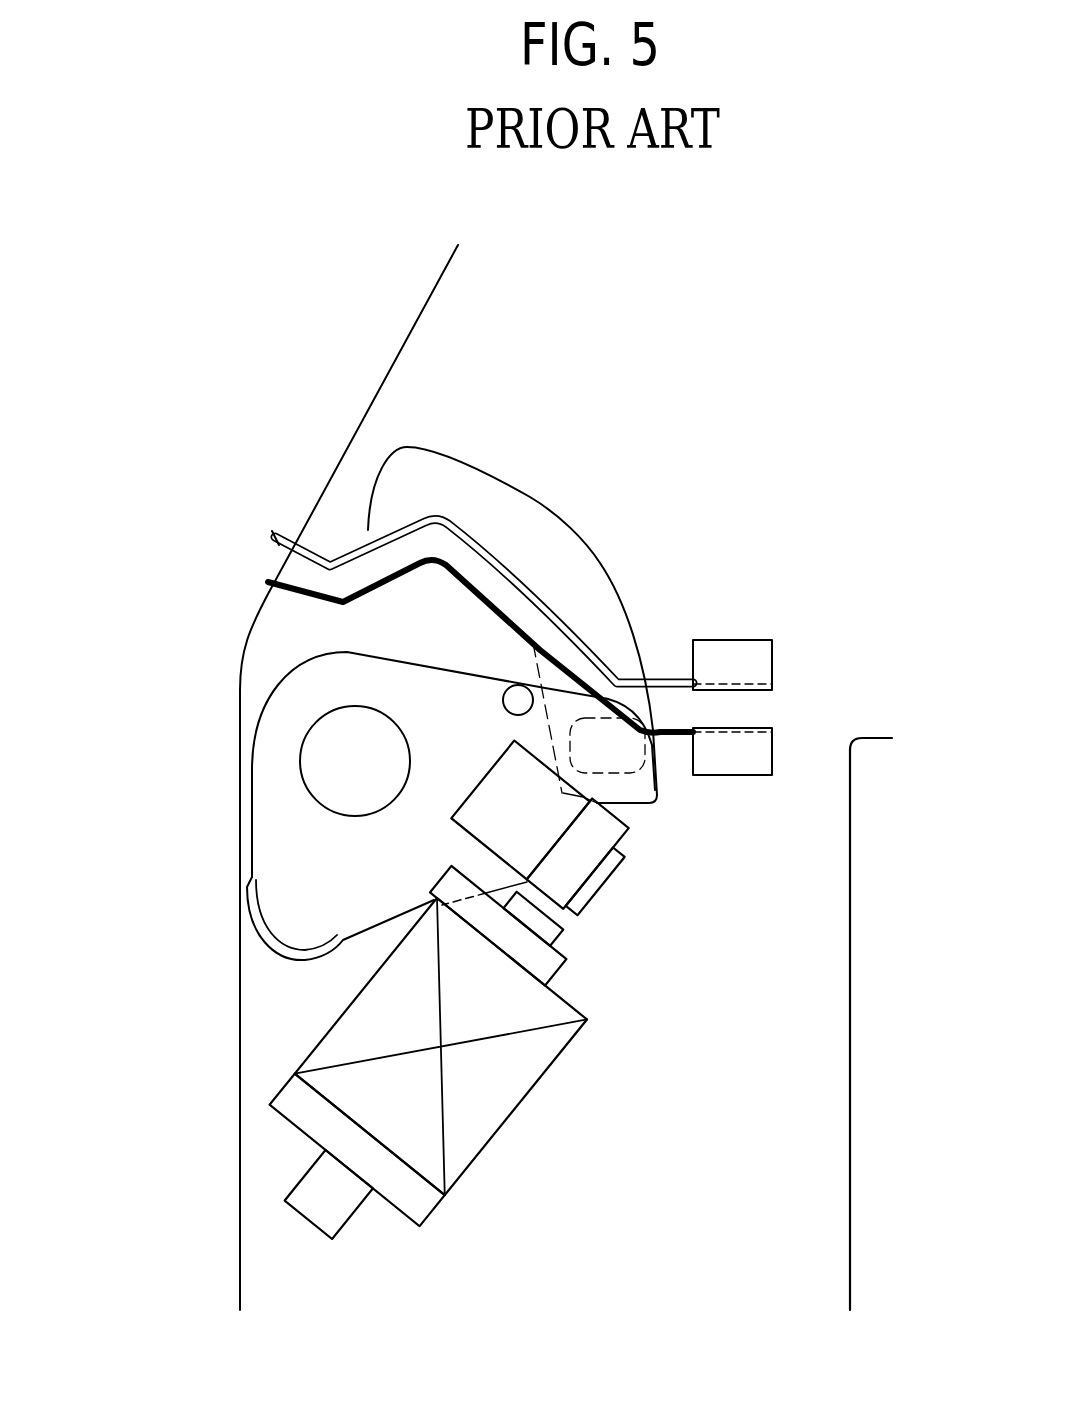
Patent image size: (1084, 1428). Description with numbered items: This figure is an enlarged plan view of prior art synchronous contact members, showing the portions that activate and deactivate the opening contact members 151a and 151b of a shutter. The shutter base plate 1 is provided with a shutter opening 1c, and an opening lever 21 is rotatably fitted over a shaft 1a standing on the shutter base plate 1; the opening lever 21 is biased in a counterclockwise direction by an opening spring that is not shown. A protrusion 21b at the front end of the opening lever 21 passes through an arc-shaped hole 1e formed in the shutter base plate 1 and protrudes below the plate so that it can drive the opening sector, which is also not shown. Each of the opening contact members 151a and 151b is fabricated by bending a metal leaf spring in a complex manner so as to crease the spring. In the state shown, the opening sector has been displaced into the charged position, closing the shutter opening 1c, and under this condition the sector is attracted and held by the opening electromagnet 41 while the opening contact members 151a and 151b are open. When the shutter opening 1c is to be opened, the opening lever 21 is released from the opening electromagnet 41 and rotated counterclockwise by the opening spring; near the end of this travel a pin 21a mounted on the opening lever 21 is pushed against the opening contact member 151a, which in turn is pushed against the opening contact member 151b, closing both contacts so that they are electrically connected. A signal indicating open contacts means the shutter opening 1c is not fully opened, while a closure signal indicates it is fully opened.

The shutter base plate 1 is at (592, 777).
The shaft 1a is at (306, 782).
The shutter opening 1c is at (852, 1135).
The arc-shaped hole 1e is at (557, 516).
The opening lever 21 is at (267, 693).
The pin 21a is at (507, 688).
The protrusion 21b is at (633, 773).
The opening electromagnet 41 is at (483, 1123).
The opening contact member 151a is at (272, 596).
The opening contact member 151b is at (353, 552).